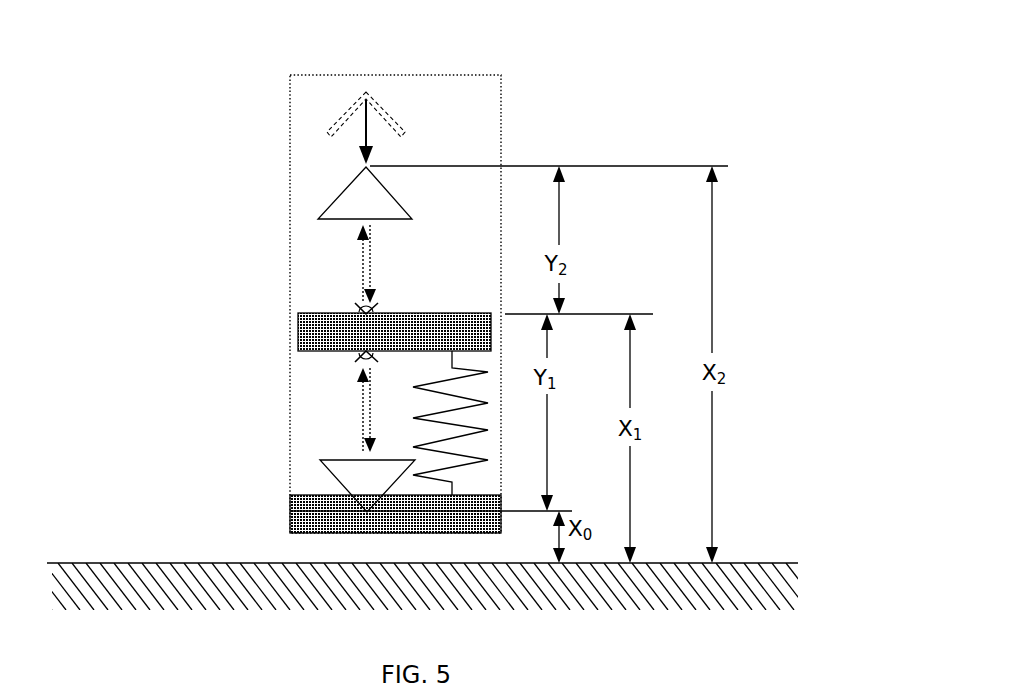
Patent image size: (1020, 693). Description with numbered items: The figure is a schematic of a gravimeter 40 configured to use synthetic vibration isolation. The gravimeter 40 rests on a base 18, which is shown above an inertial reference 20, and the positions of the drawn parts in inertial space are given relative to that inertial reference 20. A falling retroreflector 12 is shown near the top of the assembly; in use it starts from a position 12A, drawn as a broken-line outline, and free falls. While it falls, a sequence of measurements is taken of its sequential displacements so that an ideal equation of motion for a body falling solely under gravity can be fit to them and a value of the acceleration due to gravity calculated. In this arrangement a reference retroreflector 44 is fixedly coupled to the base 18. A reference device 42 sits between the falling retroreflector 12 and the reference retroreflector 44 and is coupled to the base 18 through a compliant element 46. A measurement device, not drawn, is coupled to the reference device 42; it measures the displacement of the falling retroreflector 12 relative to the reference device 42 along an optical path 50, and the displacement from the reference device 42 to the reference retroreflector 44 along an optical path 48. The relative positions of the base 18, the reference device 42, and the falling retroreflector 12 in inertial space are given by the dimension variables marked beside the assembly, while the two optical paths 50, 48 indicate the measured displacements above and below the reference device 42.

The gravimeter 40 is at (296, 58).
The starting position of falling retroreflector 12A is at (345, 117).
The falling retroreflector 12 is at (333, 200).
The optical path 50 is at (362, 267).
The reference device 42 is at (308, 330).
The optical path 48 is at (362, 413).
The compliant element 46 is at (472, 407).
The reference retroreflector 44 is at (350, 475).
The base 18 is at (290, 511).
The inertial reference 20 is at (128, 563).